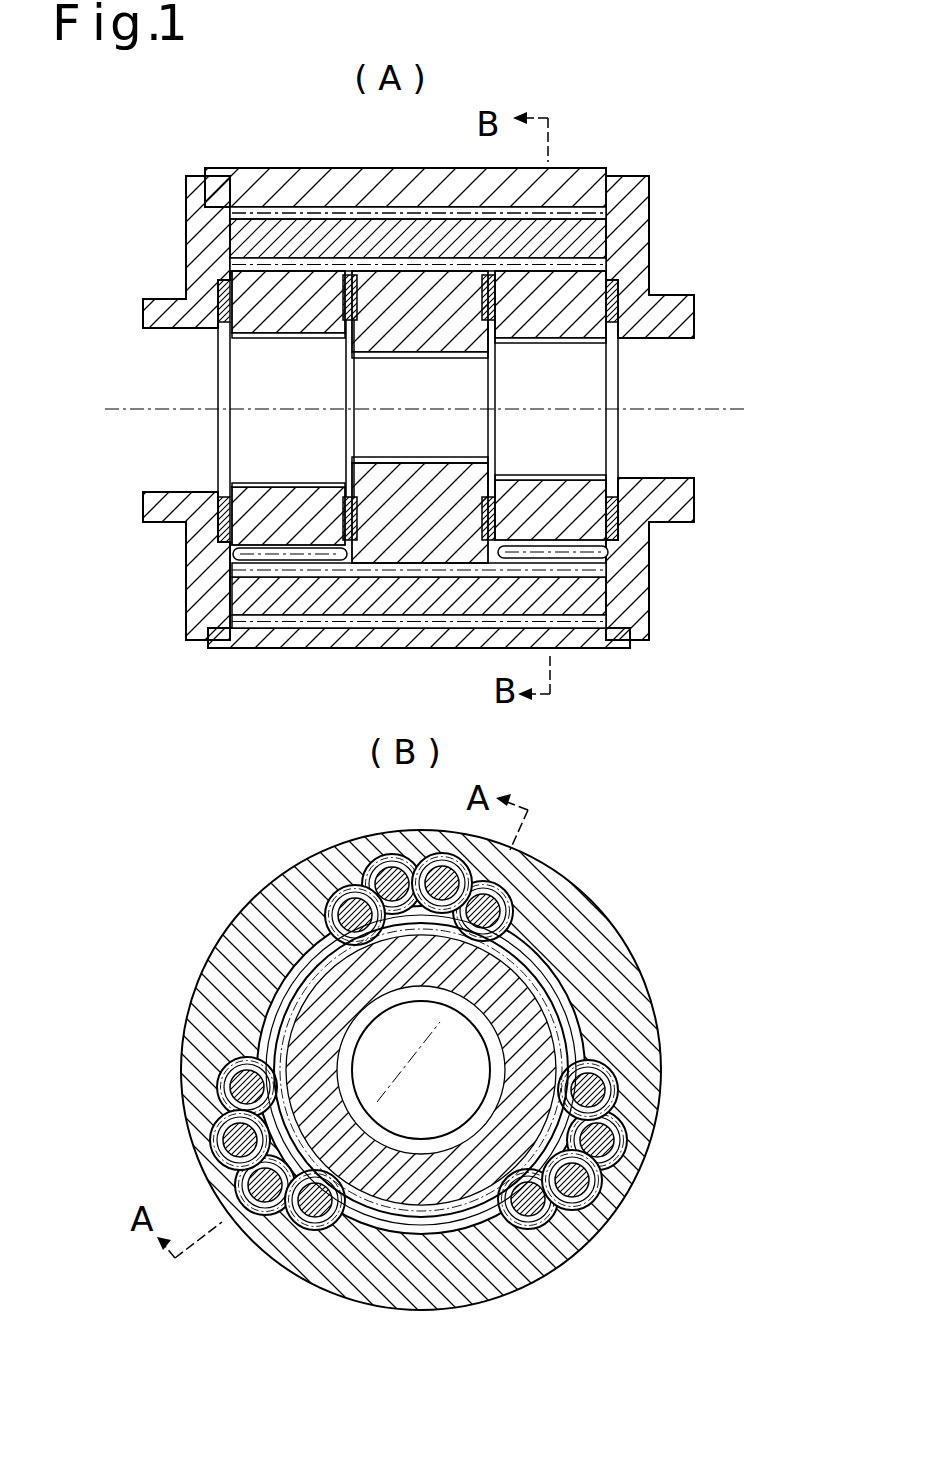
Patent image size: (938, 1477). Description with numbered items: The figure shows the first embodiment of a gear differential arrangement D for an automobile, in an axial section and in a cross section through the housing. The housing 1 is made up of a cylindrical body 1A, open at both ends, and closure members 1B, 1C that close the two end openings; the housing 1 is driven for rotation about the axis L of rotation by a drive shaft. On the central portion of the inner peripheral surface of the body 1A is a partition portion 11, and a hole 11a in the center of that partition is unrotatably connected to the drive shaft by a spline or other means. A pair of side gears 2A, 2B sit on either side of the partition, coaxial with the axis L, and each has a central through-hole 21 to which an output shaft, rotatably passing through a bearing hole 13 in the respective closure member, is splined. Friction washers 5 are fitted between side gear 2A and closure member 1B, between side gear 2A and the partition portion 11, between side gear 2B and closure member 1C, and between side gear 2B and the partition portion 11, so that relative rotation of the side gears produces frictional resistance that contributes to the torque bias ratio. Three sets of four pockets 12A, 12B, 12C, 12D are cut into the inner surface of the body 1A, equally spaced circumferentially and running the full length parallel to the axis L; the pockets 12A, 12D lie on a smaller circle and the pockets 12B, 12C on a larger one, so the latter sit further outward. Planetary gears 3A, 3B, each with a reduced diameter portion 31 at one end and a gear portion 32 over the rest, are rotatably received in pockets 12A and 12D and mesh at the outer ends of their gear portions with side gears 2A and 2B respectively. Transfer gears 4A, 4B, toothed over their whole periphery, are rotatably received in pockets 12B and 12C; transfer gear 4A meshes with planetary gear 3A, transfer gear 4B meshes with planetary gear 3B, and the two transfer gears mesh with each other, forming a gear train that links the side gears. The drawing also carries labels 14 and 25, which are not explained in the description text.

The housing 1 is at (318, 164).
The cylindrical body 1A is at (296, 172).
The closure member 1B is at (650, 208).
The closure member 1C is at (187, 225).
The side gear 2A is at (578, 525).
The side gear 2B is at (260, 518).
The planetary gear 3A is at (559, 193).
The planetary gear 3B is at (342, 916).
The transfer gear 4A is at (434, 878).
The transfer gear 4B is at (280, 600).
The friction washer 5 is at (366, 272).
The partition portion 11 is at (425, 548).
The hole 11a is at (418, 358).
The pocket 12A is at (423, 216).
The pocket 12B is at (466, 890).
The pocket 12C is at (332, 622).
The pocket 12D is at (340, 900).
The bearing hole 13 is at (665, 340).
The hub 14 is at (172, 334).
The through-hole 21 is at (268, 339).
The central bore 25 is at (377, 1008).
The reduced diameter portion 31 is at (262, 215).
The gear portion 32 is at (526, 232).
The gear differential arrangement D is at (664, 131).
The axis of rotation L is at (735, 403).